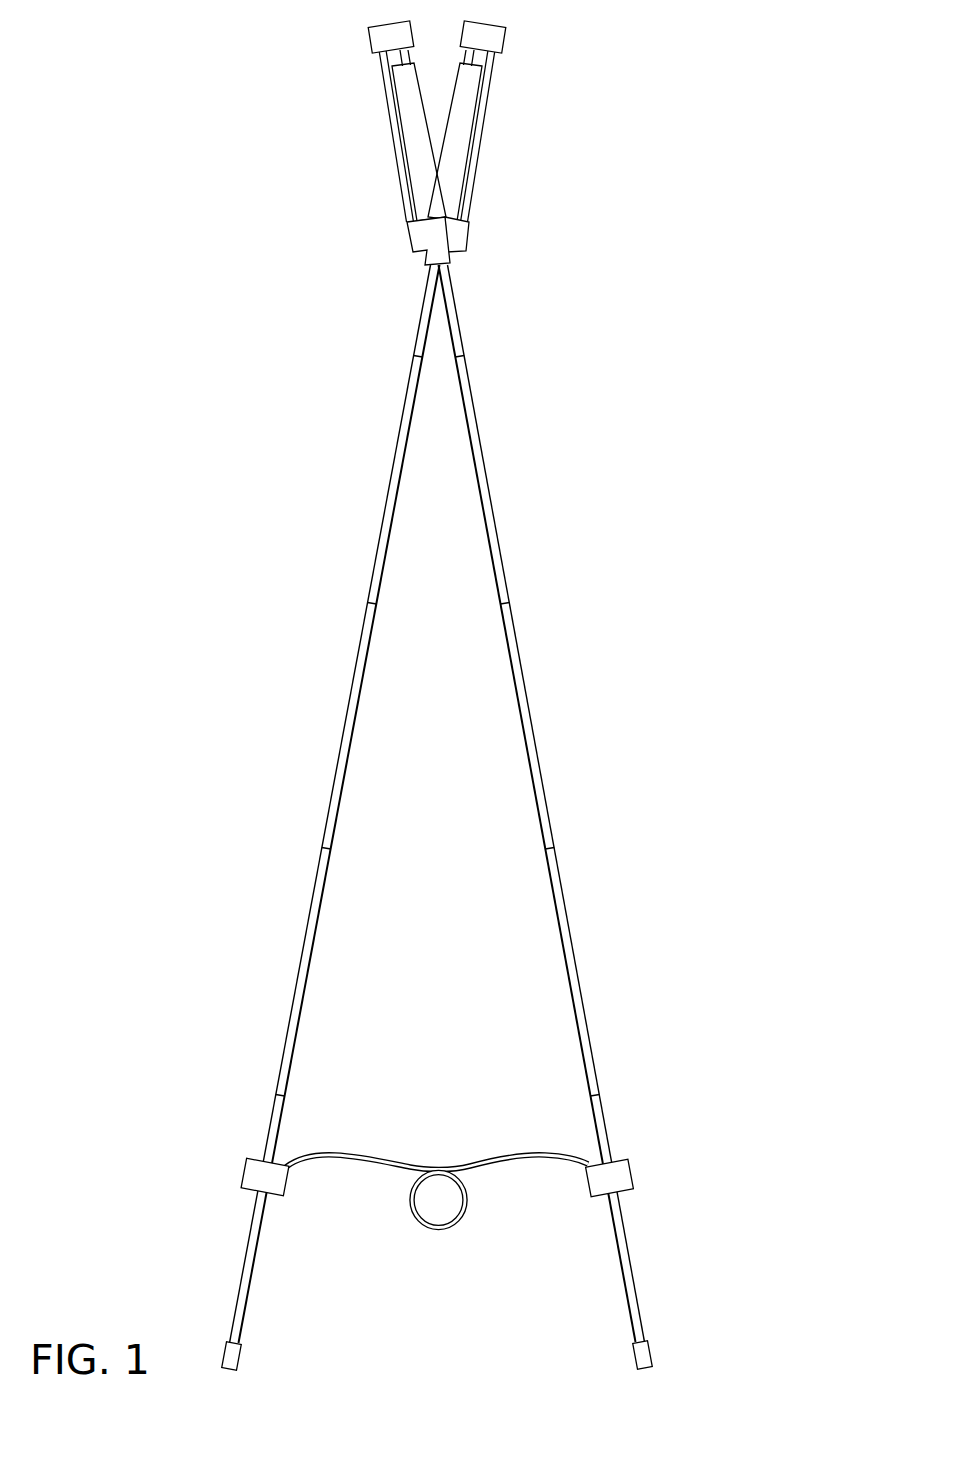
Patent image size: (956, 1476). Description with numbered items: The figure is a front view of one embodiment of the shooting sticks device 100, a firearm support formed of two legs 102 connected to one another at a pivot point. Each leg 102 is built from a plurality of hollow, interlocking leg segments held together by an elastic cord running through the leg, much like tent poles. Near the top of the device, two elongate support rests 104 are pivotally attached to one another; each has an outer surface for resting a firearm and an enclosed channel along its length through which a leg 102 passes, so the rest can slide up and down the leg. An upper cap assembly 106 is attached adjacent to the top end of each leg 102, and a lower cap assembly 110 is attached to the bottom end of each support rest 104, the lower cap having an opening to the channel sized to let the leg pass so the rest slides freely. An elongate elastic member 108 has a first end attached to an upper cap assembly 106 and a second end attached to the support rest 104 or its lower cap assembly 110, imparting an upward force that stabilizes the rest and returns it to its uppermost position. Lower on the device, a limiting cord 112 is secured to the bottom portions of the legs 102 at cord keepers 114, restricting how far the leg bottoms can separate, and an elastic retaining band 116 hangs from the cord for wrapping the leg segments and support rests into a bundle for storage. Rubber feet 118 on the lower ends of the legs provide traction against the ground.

The shooting sticks device 100 is at (166, 178).
The leg 102 is at (389, 61).
The elongate support rest 104 is at (426, 176).
The upper cap assembly 106 is at (371, 41).
The elongate elastic member 108 is at (395, 139).
The lower cap assembly 110 is at (407, 238).
The limiting cord 112 is at (400, 1162).
The cord keeper 114 is at (246, 1172).
The elastic retaining band 116 is at (437, 1229).
The rubber foot 118 is at (239, 1356).